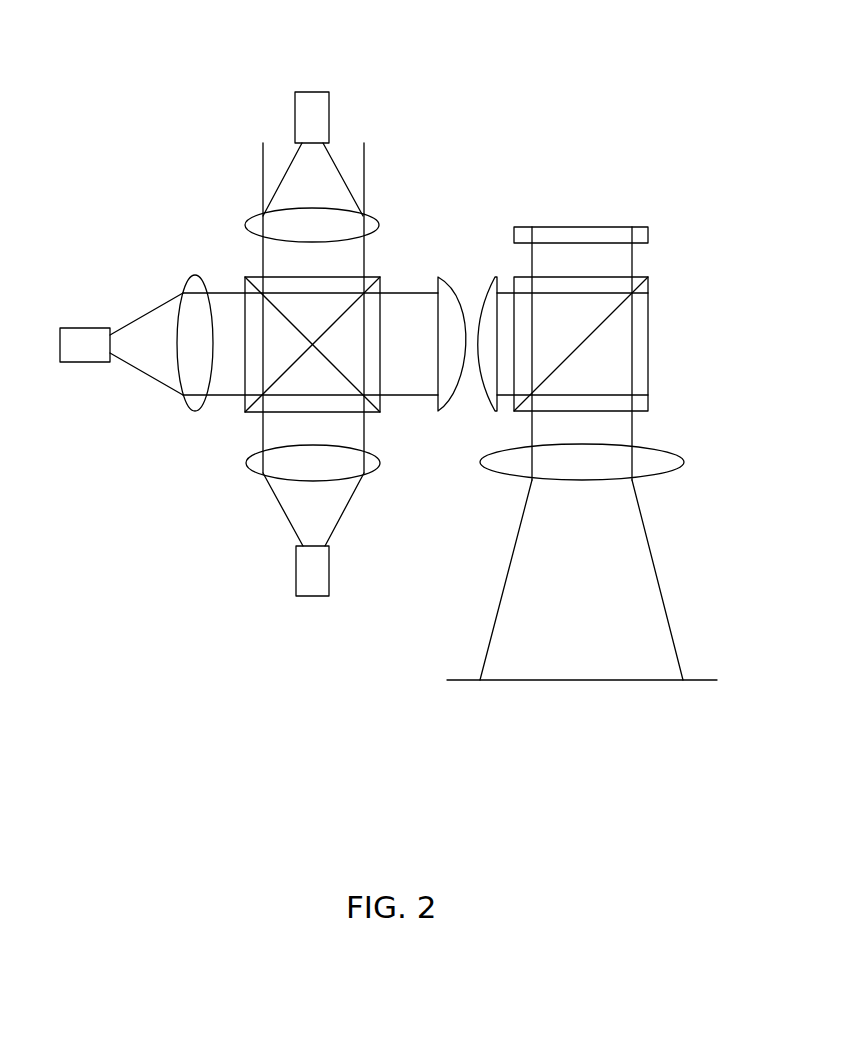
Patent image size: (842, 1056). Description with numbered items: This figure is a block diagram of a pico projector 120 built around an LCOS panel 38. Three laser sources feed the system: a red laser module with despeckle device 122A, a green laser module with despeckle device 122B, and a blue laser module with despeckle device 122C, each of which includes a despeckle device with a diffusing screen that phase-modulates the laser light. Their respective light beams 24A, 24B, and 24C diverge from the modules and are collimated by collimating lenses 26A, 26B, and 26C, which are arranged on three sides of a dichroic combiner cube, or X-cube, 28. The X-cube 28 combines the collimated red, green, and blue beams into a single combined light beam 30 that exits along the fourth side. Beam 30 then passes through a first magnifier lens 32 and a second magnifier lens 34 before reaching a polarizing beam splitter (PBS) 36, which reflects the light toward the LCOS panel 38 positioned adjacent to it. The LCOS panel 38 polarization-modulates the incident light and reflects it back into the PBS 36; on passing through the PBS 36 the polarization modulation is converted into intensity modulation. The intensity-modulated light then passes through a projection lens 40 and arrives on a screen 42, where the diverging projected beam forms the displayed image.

The pico projector 120 is at (191, 44).
The red laser module with despeckle device 122A is at (329, 101).
The light beam 24A is at (352, 195).
The collimating lens 26A is at (372, 222).
The green laser module with despeckle device 122B is at (93, 329).
The light beam 24B is at (160, 305).
The collimating lens 26B is at (190, 412).
The blue laser module with despeckle device 122C is at (298, 573).
The light beam 24C is at (285, 516).
The collimating lens 26C is at (248, 470).
The dichroic combiner cube (X-cube) 28 is at (381, 276).
The combined light beam 30 is at (423, 396).
The first magnifier lens 32 is at (449, 280).
The second magnifier lens 34 is at (487, 401).
The polarizing beam splitter (PBS) 36 is at (650, 353).
The LCOS panel 38 is at (650, 232).
The projection lens 40 is at (672, 455).
The screen 42 is at (694, 680).